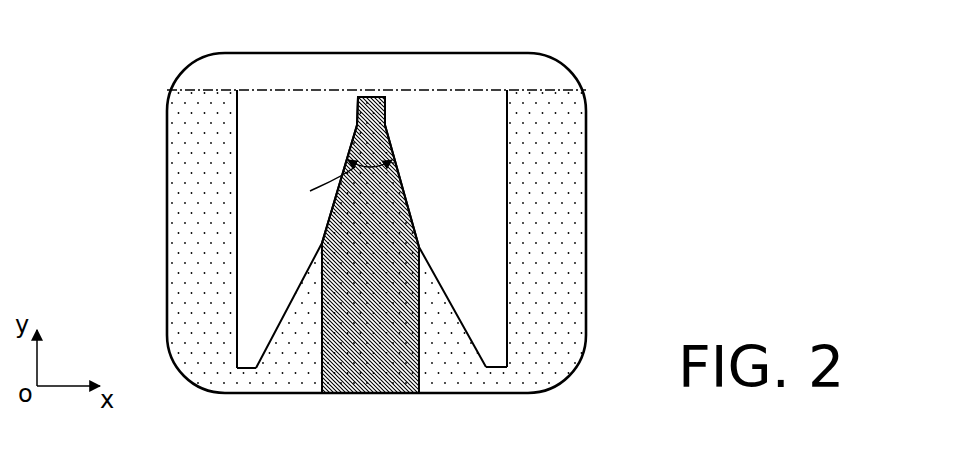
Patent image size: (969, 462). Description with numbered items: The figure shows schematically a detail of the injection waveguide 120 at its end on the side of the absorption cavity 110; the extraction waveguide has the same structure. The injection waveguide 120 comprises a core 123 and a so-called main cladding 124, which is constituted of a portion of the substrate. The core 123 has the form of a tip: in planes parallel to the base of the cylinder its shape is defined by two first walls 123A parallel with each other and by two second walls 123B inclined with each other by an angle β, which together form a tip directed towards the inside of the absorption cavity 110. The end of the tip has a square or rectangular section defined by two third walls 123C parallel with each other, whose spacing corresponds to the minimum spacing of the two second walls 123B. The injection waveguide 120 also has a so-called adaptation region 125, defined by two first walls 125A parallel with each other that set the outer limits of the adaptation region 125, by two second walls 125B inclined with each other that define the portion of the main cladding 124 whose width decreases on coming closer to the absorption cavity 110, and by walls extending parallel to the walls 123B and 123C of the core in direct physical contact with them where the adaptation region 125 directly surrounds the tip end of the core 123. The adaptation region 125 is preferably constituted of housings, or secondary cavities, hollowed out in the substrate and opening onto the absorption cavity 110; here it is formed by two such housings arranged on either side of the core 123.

The absorption cavity 110 is at (515, 63).
The injection waveguide 120 is at (560, 224).
The core 123 is at (370, 206).
The first walls 123A is at (322, 343).
The second walls 123B is at (352, 143).
The third walls 123C is at (357, 111).
The main cladding 124 is at (245, 378).
The adaptation region 125 is at (263, 223).
The first walls 125A is at (237, 117).
The second walls 125B is at (300, 277).